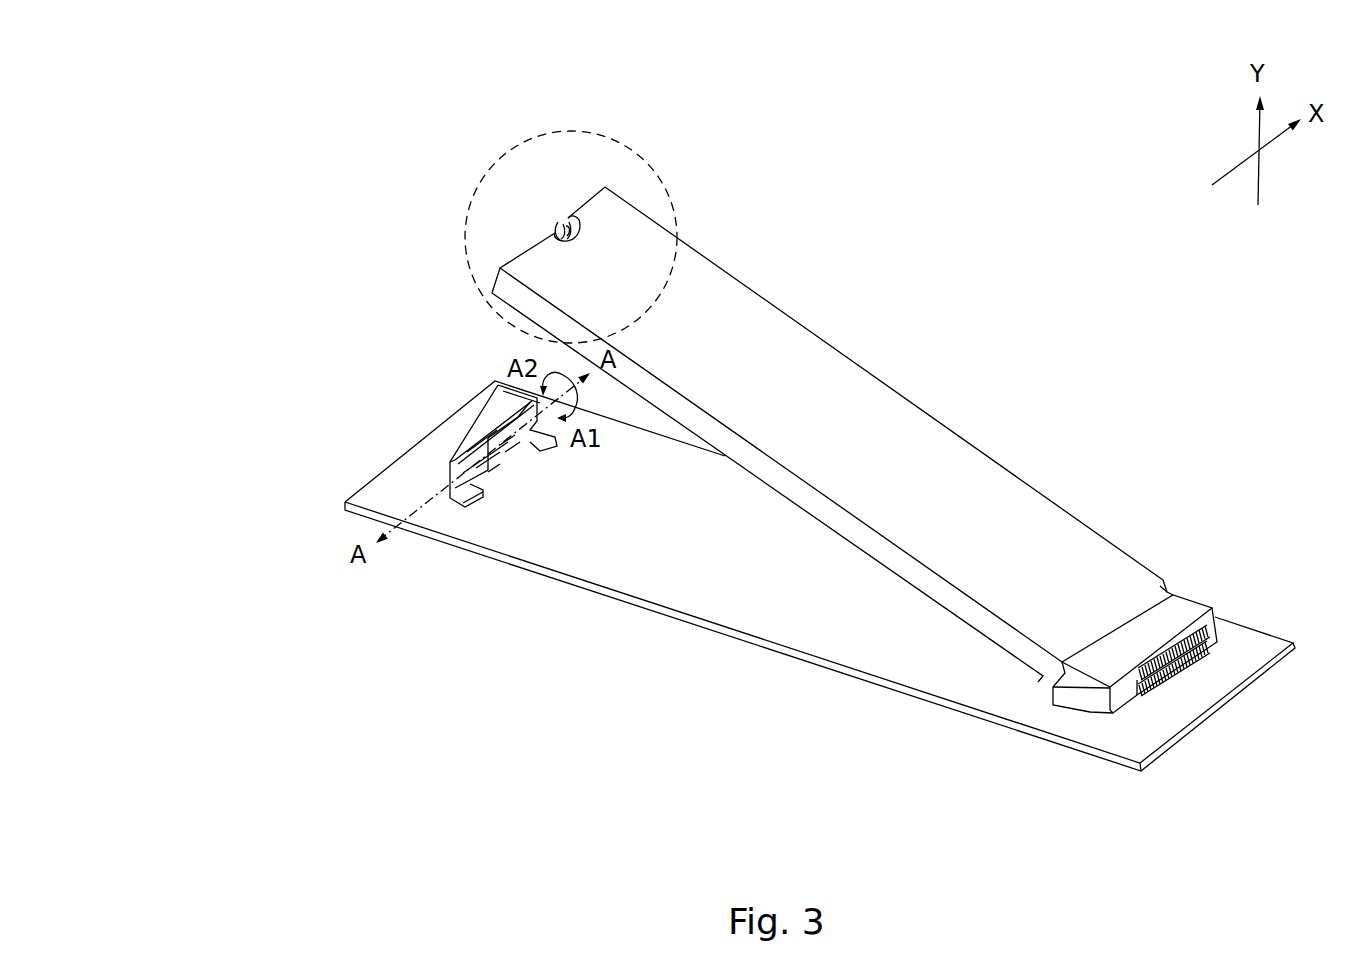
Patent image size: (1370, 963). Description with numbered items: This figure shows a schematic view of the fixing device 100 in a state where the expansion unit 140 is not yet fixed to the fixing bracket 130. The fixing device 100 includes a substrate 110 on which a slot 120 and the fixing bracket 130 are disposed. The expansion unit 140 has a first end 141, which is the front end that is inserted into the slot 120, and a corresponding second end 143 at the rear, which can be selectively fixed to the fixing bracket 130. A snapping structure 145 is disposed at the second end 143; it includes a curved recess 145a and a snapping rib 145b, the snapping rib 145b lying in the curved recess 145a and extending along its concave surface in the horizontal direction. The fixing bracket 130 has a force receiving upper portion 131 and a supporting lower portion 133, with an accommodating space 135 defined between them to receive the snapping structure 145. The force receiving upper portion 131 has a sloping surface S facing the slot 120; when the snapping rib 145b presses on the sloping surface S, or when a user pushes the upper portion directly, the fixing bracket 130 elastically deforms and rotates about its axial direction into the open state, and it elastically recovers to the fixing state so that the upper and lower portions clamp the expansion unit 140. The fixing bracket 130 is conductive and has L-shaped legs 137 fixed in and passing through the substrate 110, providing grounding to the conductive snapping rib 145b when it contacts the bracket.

The fixing device 100 is at (305, 232).
The substrate 110 is at (1268, 633).
The slot 120 is at (1190, 603).
The fixing bracket 130 is at (455, 458).
The force receiving upper portion 131 is at (497, 428).
The supporting lower portion 133 is at (504, 463).
The accommodating space 135 is at (496, 480).
The L-shaped legs 137 is at (468, 465).
The expansion unit 140 is at (862, 373).
The first end 141 is at (1169, 577).
The second end 143 is at (626, 160).
The snapping structure 145 is at (592, 77).
The curved recess 145a is at (553, 210).
The snapping rib 145b is at (556, 233).
The sloping surface S is at (523, 460).